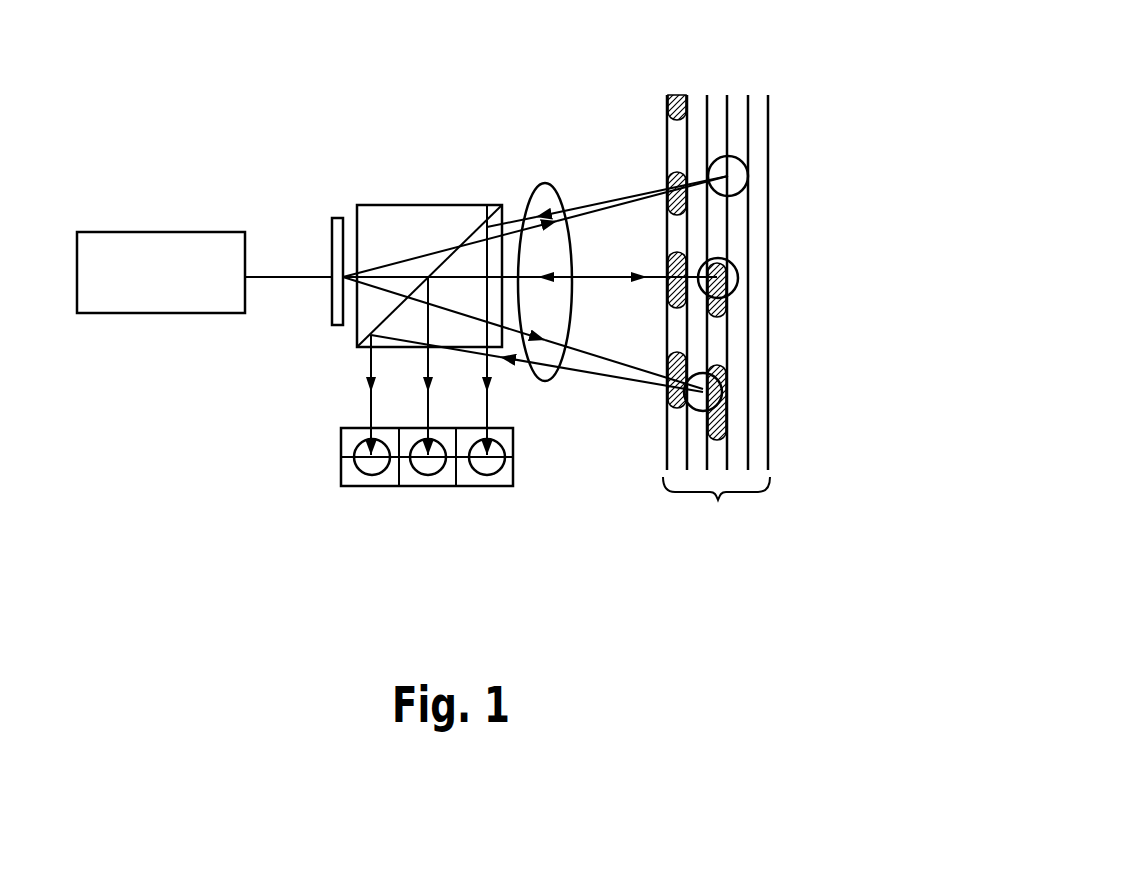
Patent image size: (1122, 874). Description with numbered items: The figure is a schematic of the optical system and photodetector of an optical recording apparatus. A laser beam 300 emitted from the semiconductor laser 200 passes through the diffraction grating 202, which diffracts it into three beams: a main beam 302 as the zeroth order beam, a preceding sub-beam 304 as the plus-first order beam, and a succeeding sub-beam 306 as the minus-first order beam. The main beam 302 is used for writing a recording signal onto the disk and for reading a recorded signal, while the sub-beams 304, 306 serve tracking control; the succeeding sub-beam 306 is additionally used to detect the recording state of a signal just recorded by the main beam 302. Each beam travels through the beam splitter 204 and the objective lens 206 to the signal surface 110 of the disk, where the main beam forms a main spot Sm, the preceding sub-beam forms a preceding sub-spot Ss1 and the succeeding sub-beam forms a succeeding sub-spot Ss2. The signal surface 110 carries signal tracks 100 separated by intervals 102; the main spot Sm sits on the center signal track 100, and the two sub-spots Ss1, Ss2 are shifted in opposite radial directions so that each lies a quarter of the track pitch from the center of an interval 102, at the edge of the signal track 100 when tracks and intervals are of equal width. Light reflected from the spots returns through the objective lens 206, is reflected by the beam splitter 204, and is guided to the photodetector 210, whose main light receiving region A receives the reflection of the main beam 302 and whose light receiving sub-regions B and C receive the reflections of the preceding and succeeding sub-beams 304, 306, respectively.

The signal track 100 is at (671, 92).
The interval between adjacent signal tracks 102 is at (698, 103).
The signal surface 110 is at (763, 305).
The semiconductor laser 200 is at (130, 232).
The diffraction grating 202 is at (337, 218).
The beam splitter 204 is at (428, 214).
The objective lens 206 is at (548, 381).
The photodetector 210 is at (376, 525).
The laser beam 300 is at (281, 277).
The main beam 302 is at (593, 277).
The preceding sub-beam 304 is at (402, 261).
The succeeding sub-beam 306 is at (597, 355).
The preceding sub-spot Ss1 is at (748, 167).
The main spot Sm is at (737, 272).
The succeeding sub-spot Ss2 is at (683, 411).
The main light receiving region A is at (428, 481).
The light receiving sub-region B is at (487, 481).
The light receiving sub-region C is at (372, 481).